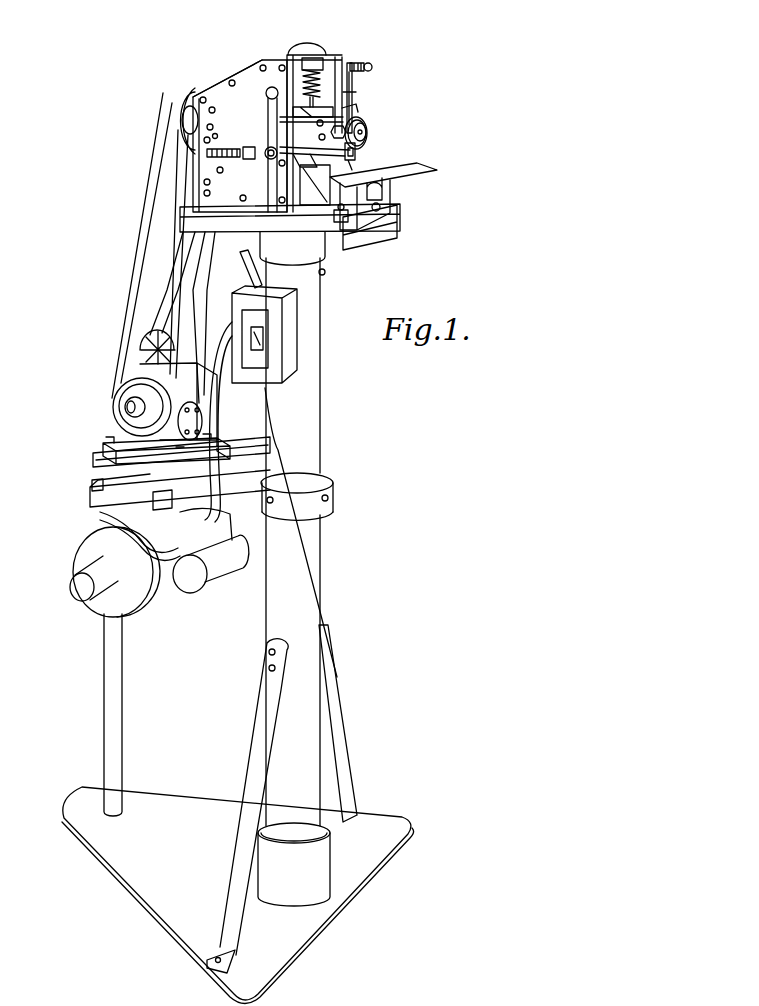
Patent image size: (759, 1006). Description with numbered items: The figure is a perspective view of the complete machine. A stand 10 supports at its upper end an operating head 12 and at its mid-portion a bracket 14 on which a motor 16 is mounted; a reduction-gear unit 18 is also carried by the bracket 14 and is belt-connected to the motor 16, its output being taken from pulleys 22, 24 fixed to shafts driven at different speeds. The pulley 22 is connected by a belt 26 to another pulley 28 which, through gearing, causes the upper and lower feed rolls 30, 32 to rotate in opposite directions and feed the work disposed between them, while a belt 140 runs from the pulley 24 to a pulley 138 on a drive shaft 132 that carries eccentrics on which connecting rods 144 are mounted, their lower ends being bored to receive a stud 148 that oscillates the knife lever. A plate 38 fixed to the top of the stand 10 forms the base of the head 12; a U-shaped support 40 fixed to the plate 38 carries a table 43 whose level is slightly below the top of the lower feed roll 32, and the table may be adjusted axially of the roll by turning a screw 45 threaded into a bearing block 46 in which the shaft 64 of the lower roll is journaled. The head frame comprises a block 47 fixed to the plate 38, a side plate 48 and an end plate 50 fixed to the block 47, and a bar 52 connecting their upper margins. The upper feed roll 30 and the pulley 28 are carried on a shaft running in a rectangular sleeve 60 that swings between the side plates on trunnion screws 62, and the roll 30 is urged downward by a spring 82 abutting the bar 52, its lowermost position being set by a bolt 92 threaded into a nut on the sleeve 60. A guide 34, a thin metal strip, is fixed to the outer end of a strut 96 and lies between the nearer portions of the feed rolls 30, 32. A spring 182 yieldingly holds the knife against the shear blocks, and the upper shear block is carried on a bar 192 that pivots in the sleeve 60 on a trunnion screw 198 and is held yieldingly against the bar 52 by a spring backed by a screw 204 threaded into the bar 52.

The stand 10 is at (308, 428).
The operating head 12 is at (243, 54).
The bracket 14 is at (93, 462).
The motor 16 is at (78, 556).
The reduction-gear unit 18 is at (150, 370).
The pulley 22 is at (112, 398).
The pulley 24 is at (190, 350).
The belt 26 is at (150, 222).
The pulley 28 is at (176, 112).
The upper feed roll 30 is at (370, 131).
The lower feed roll 32 is at (372, 160).
The guide 34 is at (364, 141).
The plate 38 is at (378, 213).
The U-shaped support 40 is at (391, 192).
The table 43 is at (405, 170).
The screw 45 is at (400, 222).
The bearing block 46 is at (342, 224).
The block 47 is at (302, 205).
The side plate 48 is at (230, 190).
The end plate 50 is at (196, 160).
The bar 52 is at (340, 68).
The rectangular sleeve 60 is at (368, 126).
The trunnion screws 62 is at (214, 125).
The shaft 64 is at (328, 178).
The spring 82 is at (355, 84).
The bolt 92 is at (310, 52).
The strut 96 is at (358, 164).
The drive shaft 132 is at (300, 66).
The pulley 138 is at (323, 58).
The belt 140 is at (167, 290).
The connecting rod 144 is at (274, 128).
The stud 148 is at (276, 162).
The spring 182 is at (212, 178).
The bar 192 is at (360, 96).
The trunnion screw 198 is at (358, 108).
The screw 204 is at (372, 68).